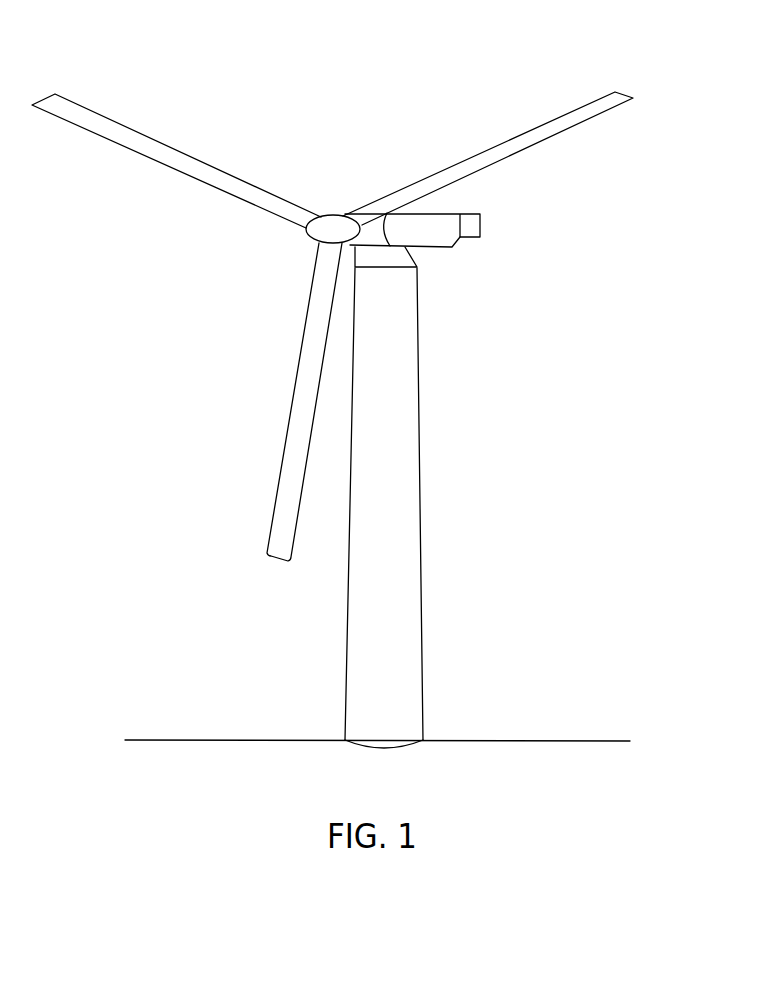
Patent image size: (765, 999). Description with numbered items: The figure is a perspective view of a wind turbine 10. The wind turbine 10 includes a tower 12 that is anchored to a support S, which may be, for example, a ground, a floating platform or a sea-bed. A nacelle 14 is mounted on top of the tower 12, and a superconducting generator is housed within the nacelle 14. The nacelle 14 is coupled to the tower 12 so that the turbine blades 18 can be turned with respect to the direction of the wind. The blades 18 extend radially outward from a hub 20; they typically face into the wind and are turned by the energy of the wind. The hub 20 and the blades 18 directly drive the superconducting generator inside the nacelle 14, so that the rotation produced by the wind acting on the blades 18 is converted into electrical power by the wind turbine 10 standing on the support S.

The wind turbine 10 is at (176, 51).
The tower 12 is at (417, 530).
The nacelle 14 is at (440, 230).
The turbine blades 18 is at (533, 146).
The hub 20 is at (332, 227).
The support S is at (532, 743).